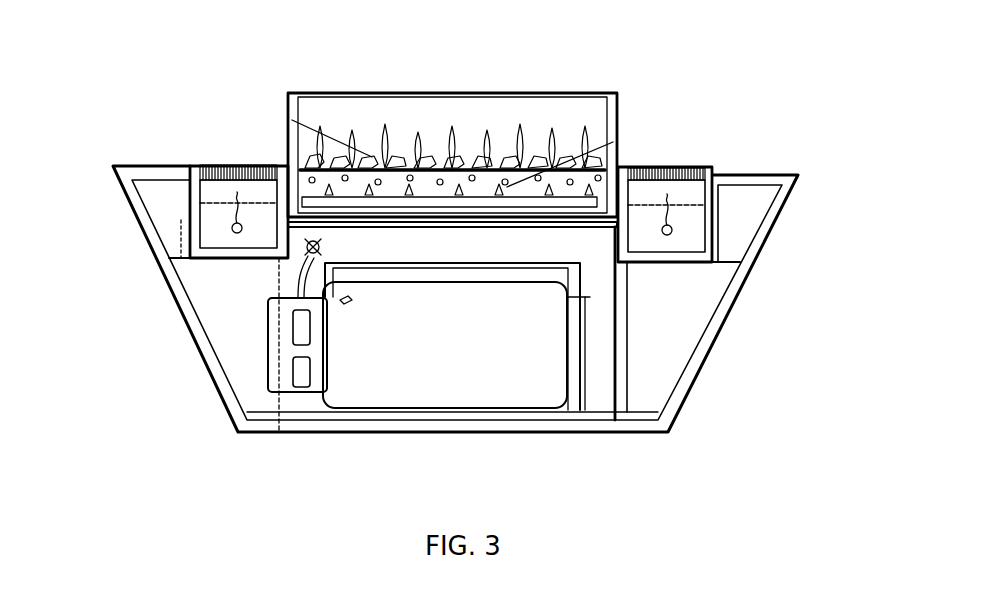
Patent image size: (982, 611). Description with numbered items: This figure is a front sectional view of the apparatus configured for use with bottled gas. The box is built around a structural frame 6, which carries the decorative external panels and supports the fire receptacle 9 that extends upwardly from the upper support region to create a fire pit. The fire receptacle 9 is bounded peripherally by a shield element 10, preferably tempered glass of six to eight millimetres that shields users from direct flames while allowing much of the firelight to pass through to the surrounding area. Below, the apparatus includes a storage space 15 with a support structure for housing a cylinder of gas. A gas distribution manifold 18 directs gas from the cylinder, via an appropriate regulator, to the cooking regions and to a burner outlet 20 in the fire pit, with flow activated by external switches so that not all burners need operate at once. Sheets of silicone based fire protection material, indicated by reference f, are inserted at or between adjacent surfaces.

The burner outlet 20 is at (265, 167).
The shield element 10 is at (617, 128).
The gas distribution manifold 18 is at (335, 247).
The fire receptacle 9 is at (233, 228).
The structural frame 6 is at (628, 332).
The storage space 15 is at (595, 395).
The fire protection material f is at (192, 182).